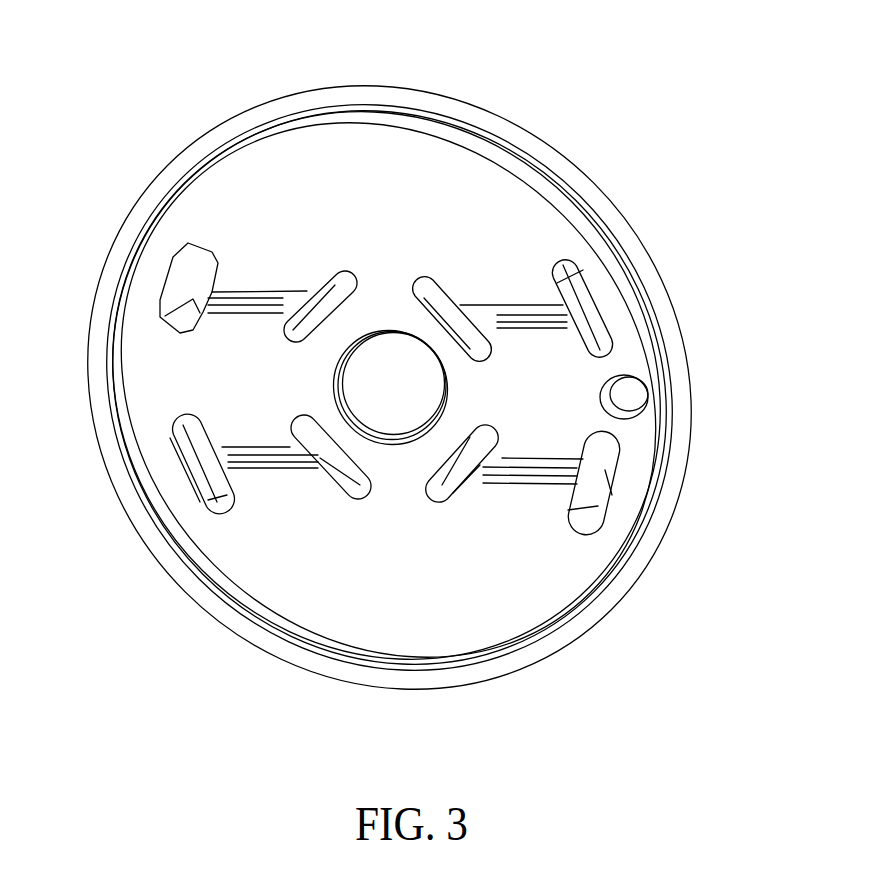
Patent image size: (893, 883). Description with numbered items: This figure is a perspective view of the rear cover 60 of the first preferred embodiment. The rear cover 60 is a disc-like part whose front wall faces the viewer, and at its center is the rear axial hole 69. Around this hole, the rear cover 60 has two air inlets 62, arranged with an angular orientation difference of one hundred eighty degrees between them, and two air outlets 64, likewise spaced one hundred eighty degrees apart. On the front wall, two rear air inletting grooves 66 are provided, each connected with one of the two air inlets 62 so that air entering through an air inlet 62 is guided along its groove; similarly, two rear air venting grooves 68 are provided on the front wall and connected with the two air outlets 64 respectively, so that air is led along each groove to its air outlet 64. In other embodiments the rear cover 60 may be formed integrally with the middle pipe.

The rear cover 60 is at (478, 108).
The air inlet 62 is at (587, 300).
The air outlet 64 is at (193, 270).
The rear air inletting groove 66 is at (472, 320).
The rear air venting groove 68 is at (320, 285).
The rear axial hole 69 is at (395, 367).